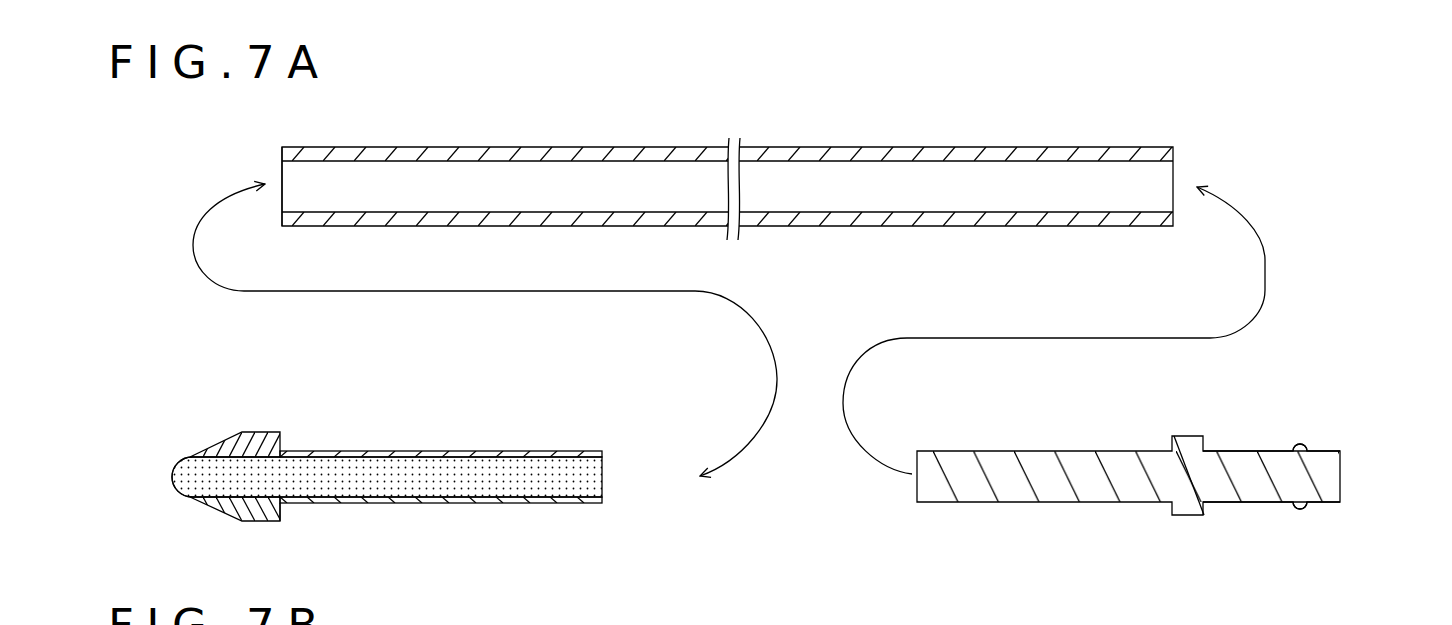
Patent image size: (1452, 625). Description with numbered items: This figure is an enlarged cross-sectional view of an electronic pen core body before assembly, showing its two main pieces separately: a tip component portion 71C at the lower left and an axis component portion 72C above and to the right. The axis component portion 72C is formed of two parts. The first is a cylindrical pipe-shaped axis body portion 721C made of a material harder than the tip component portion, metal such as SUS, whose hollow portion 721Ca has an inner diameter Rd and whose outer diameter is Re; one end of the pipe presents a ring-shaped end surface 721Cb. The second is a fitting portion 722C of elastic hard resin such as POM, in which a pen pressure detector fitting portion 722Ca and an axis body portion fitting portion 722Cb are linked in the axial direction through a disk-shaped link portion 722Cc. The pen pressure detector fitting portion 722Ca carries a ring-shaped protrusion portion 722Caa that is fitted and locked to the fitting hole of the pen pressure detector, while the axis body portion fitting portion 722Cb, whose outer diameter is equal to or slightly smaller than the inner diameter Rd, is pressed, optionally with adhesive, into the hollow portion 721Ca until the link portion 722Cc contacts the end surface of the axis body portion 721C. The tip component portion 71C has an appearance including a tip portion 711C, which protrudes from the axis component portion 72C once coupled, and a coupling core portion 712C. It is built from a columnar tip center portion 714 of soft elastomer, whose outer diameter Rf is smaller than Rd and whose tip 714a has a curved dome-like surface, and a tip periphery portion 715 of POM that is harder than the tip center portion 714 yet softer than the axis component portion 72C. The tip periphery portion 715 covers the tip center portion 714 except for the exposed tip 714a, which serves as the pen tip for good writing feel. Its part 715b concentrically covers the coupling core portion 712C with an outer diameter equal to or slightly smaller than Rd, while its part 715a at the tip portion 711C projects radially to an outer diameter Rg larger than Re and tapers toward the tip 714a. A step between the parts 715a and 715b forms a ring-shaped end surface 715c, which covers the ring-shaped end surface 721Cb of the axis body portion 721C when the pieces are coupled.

The axis component portion 72C is at (1360, 145).
The axis body portion 721C is at (1173, 149).
The hollow portion 721Ca is at (907, 168).
The ring-shaped end surface 721Cb is at (280, 155).
The fitting portion 722C is at (1272, 456).
The pen pressure detector fitting portion 722Ca is at (1228, 497).
The ring-shaped protrusion portion 722Caa is at (1298, 512).
The axis body portion fitting portion 722Cb is at (1102, 495).
The link portion 722Cc is at (1188, 443).
The tip component portion 71C is at (377, 371).
The tip portion 711C is at (219, 434).
The coupling core portion 712C is at (320, 446).
The tip center portion 714 is at (385, 482).
The tip 714a is at (178, 482).
The tip periphery portion 715 is at (445, 503).
The part of the tip portion of the tip periphery portion 715a is at (233, 510).
The part of the coupling core portion of the tip periphery portion 715b is at (483, 500).
The ring-shaped end surface 715c is at (283, 511).
The outer diameter of the axis body portion Re is at (443, 226).
The inner diameter of the hollow portion Rd is at (568, 248).
The outer diameter of the tip center portion Rf is at (152, 521).
The outer diameter of the projecting part of the tip periphery portion Rg is at (280, 432).